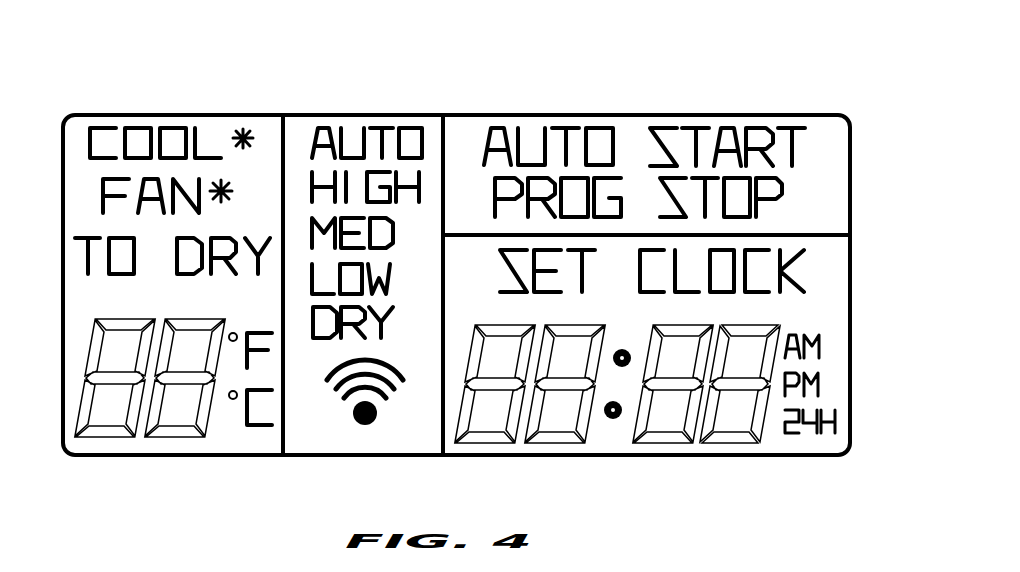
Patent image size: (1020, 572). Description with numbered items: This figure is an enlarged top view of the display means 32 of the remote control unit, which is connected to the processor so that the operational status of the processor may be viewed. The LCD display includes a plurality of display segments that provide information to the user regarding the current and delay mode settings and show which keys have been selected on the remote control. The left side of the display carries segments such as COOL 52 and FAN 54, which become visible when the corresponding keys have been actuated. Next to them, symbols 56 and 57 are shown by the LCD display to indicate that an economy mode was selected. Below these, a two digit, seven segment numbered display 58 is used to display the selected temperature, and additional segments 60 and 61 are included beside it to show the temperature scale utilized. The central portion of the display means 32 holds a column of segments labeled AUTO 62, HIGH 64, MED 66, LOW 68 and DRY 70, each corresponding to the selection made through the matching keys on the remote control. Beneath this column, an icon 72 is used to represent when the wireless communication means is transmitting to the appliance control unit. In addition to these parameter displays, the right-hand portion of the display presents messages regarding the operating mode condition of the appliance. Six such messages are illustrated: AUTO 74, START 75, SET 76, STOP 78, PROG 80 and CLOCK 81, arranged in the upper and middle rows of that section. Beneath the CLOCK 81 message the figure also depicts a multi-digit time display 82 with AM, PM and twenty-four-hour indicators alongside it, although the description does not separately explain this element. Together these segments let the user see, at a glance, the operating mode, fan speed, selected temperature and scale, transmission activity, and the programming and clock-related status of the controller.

The display means 32 is at (665, 114).
The COOL segment 52 is at (133, 127).
The FAN segment 54 is at (100, 196).
The economy mode symbol 56 is at (234, 132).
The economy mode symbol 57 is at (232, 195).
The two digit, seven segment numbered display 58 is at (150, 372).
The temperature scale segment 60 is at (230, 352).
The temperature scale segment 61 is at (255, 427).
The AUTO segment 62 is at (378, 128).
The HIGH segment 64 is at (312, 194).
The MED segment 66 is at (392, 235).
The LOW segment 68 is at (391, 283).
The DRY segment 70 is at (312, 322).
The icon 72 is at (371, 421).
The AUTO message 74 is at (556, 128).
The START message 75 is at (764, 128).
The SET message 76 is at (590, 253).
The STOP message 78 is at (783, 190).
The PROG message 80 is at (495, 199).
The CLOCK message 81 is at (722, 250).
The clock time display 82 is at (733, 325).